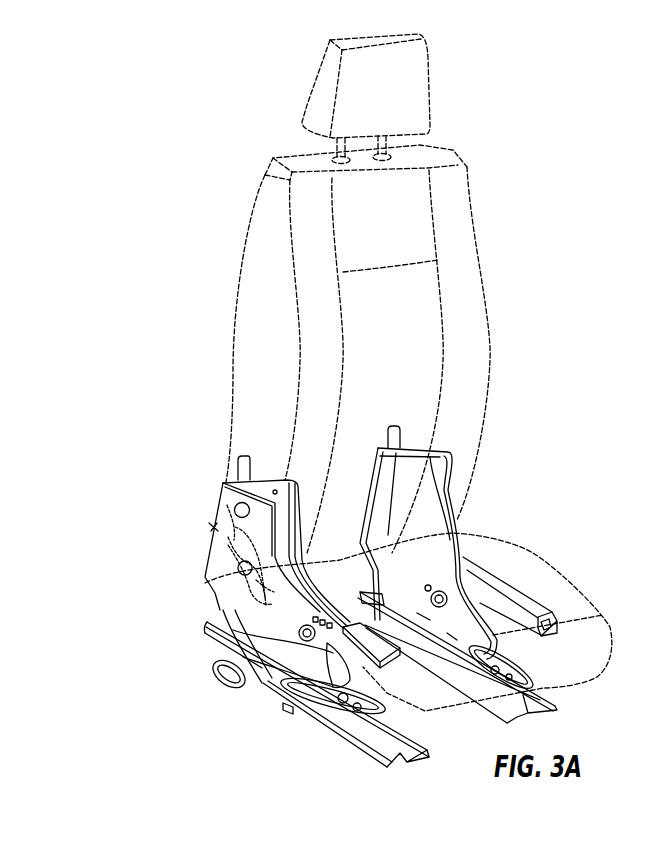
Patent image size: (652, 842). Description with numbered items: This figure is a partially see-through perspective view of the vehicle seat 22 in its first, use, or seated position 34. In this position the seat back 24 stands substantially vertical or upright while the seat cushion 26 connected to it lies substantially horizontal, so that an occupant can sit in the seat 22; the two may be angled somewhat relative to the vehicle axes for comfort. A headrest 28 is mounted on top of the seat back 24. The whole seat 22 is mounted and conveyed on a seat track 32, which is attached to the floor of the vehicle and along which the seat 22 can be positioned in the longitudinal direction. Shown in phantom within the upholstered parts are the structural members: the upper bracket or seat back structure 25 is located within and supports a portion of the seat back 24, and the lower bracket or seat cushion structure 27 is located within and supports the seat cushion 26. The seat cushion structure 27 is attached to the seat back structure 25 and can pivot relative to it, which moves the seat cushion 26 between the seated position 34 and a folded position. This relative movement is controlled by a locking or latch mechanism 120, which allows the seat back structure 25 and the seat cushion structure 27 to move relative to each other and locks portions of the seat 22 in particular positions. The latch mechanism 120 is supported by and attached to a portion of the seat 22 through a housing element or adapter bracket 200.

The seat 22 is at (518, 209).
The seated position 34 is at (552, 251).
The headrest 28 is at (322, 90).
The seat back 24 is at (488, 363).
The seat cushion 26 is at (537, 557).
The seat back structure 25 is at (263, 480).
The latch mechanism 120 is at (215, 527).
The adapter bracket 200 is at (205, 583).
The seat cushion structure 27 is at (300, 673).
The seat track 32 is at (337, 733).